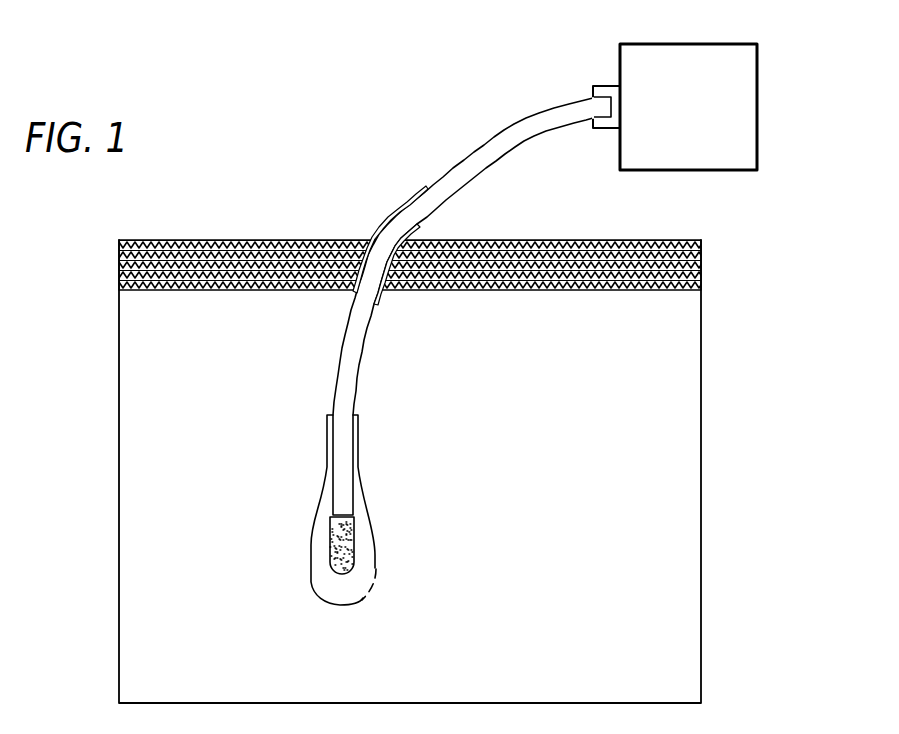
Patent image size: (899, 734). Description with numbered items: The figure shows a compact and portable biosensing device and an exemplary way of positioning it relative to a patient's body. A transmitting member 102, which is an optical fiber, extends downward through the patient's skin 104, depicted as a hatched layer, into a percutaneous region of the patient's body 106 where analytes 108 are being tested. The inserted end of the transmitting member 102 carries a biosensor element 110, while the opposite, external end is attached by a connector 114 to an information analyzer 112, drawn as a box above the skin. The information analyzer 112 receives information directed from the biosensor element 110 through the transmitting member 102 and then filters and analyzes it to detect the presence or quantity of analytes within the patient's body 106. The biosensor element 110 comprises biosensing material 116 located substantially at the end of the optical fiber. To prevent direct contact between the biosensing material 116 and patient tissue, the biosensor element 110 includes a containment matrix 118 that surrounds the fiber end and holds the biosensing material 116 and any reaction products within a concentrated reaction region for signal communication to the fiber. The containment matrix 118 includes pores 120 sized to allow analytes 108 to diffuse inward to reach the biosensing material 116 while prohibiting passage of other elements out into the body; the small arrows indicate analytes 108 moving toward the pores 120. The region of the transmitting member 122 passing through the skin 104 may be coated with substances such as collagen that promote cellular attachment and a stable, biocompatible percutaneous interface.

The transmitting member 102 is at (489, 163).
The patient's skin 104 is at (663, 240).
The patient's body 106 is at (701, 446).
The analytes 108 is at (317, 582).
The biosensor element 110 is at (450, 440).
The information analyzer 112 is at (735, 170).
The connector 114 is at (607, 128).
The biosensing material 116 is at (355, 552).
The containment matrix 118 is at (367, 508).
The pores 120 is at (373, 570).
The region of the transmitting member passing through the skin 122 is at (396, 212).